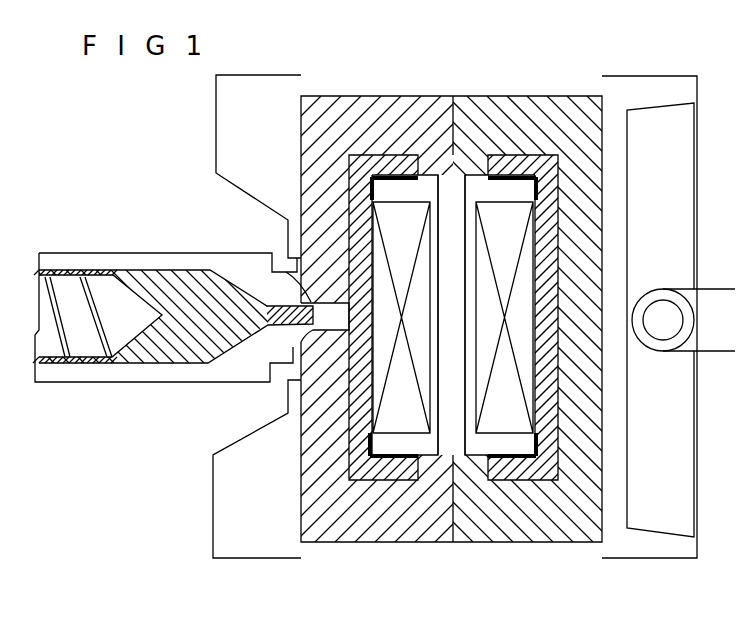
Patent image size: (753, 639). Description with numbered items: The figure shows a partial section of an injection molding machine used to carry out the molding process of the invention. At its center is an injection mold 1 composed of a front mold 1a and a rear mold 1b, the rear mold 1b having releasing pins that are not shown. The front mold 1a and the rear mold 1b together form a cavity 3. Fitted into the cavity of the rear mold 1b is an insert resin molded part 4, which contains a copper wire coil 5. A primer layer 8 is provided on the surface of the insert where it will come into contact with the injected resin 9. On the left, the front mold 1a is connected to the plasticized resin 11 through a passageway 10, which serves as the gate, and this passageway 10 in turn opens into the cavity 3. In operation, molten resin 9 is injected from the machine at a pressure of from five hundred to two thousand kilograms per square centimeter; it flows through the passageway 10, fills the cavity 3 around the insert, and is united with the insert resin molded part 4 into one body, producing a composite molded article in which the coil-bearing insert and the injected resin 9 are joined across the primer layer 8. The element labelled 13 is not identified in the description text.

The injection mold 1 is at (376, 276).
The front mold 1a is at (433, 100).
The rear mold 1b is at (418, 47).
The cavity 3 is at (397, 483).
The insert resin molded part 4 is at (452, 510).
The copper wire coil 5 is at (507, 463).
The primer layer 8 is at (368, 178).
The injected resin 9 is at (180, 350).
The passageway 10 is at (288, 391).
The plasticized resin 11 is at (150, 360).
The nozzle tip 13 is at (312, 303).